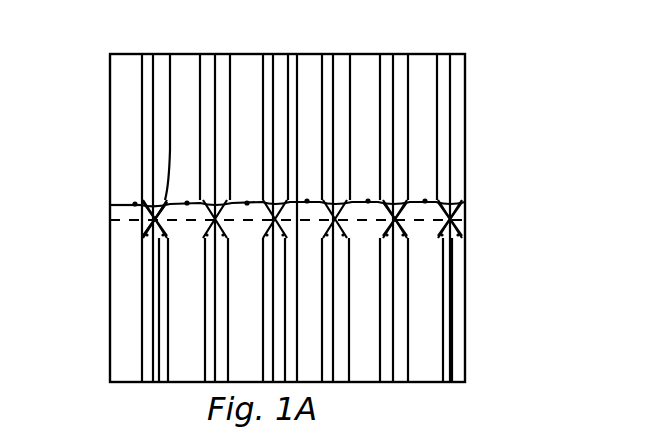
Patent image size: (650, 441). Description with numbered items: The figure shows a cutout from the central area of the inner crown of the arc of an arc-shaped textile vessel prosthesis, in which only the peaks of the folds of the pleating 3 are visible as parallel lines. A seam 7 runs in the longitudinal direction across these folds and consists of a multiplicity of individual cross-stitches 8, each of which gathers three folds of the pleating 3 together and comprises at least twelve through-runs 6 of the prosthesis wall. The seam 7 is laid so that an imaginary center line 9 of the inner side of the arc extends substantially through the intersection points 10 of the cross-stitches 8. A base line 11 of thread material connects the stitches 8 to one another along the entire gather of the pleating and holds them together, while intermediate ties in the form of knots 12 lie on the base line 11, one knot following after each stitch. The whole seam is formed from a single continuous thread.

The folds of the pleating 3 is at (452, 80).
The through-runs 6 is at (150, 215).
The seam 7 is at (147, 203).
The cross-stitches 8 is at (453, 212).
The center line 9 is at (368, 218).
The intersection points 10 is at (143, 213).
The base line 11 is at (437, 187).
The knots 12 is at (443, 193).